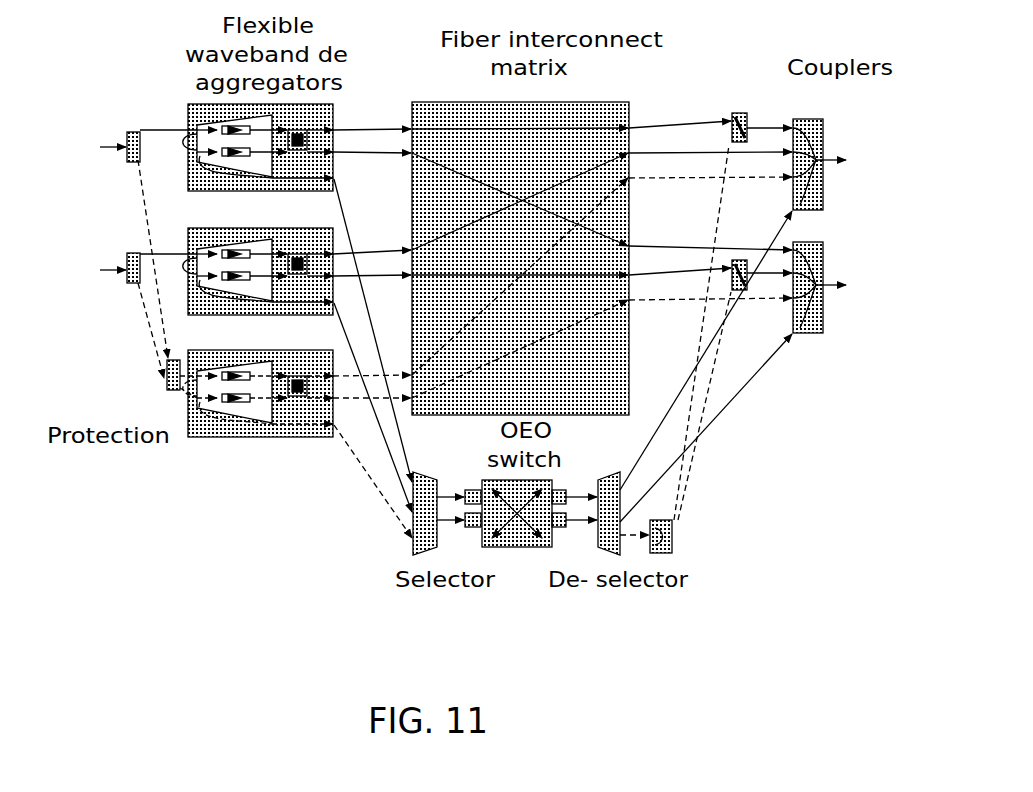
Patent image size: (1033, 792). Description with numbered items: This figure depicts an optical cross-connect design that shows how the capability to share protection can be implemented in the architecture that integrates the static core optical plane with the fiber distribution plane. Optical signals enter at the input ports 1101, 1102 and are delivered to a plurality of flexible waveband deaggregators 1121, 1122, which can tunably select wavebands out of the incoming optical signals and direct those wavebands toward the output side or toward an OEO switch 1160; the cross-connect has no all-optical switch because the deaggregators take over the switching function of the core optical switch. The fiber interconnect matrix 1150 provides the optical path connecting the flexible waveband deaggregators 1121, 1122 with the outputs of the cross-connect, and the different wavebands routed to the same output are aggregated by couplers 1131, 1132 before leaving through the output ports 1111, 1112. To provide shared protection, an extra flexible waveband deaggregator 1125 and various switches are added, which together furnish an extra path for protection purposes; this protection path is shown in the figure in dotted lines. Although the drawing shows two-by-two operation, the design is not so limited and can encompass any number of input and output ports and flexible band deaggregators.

The input port In 1 1101 is at (128, 243).
The input port In 2 1102 is at (120, 315).
The output port Out 1 1111 is at (876, 181).
The output port Out 2 1112 is at (876, 299).
The flexible waveband deaggregator 1121 is at (258, 162).
The flexible waveband deaggregator 1122 is at (258, 283).
The extra flexible waveband deaggregator 1125 is at (258, 409).
The coupler 1131 is at (809, 153).
The coupler 1132 is at (809, 311).
The fiber interconnect matrix 1150 is at (520, 245).
The OEO switch 1160 is at (515, 525).